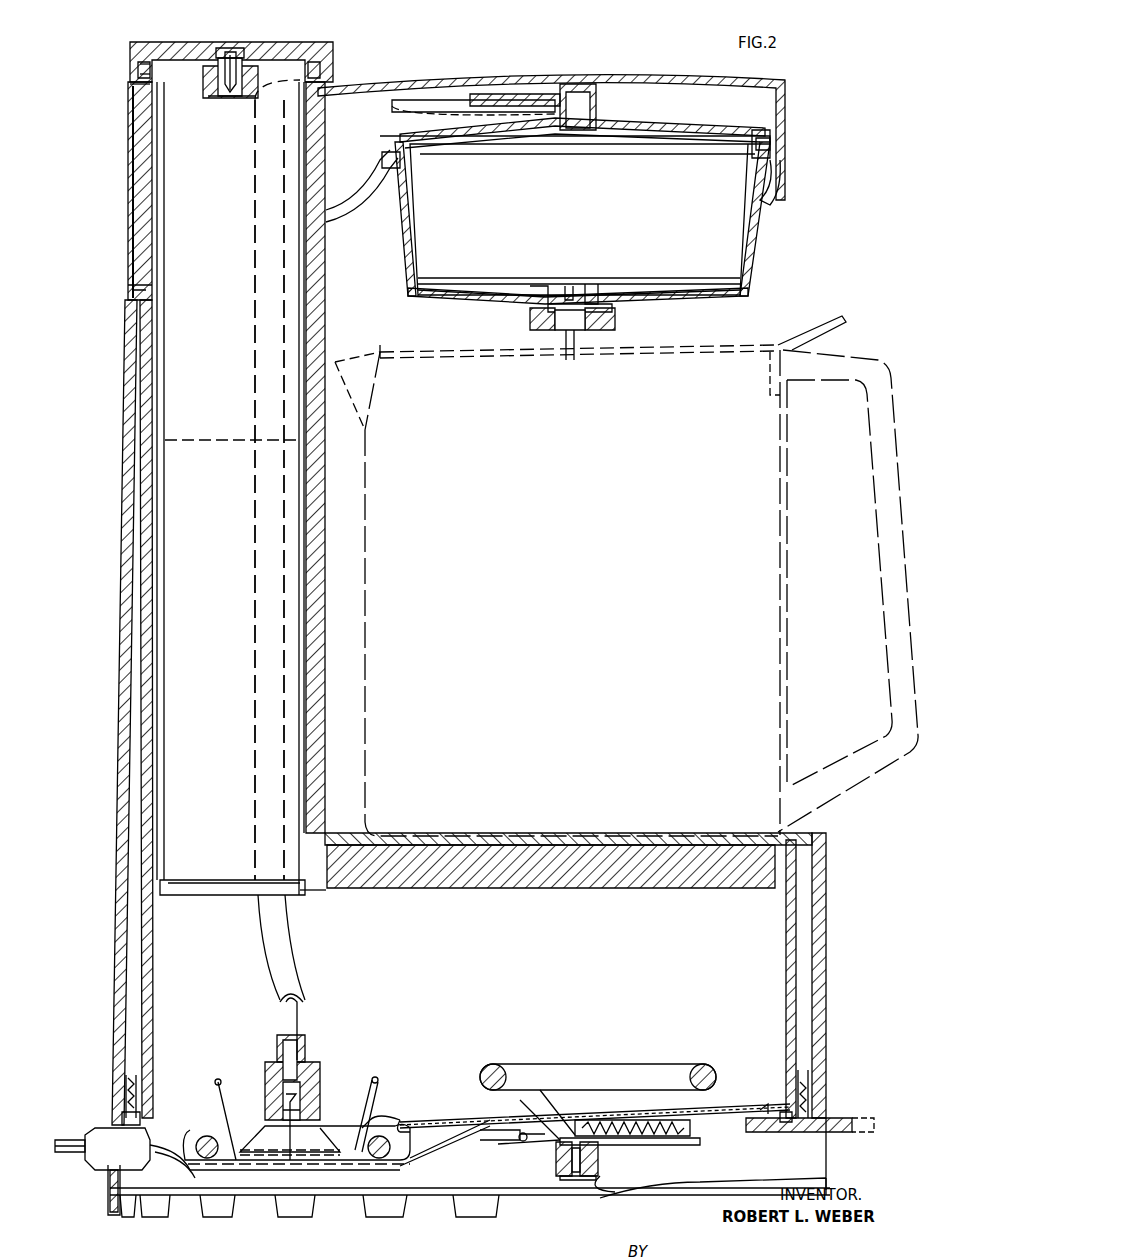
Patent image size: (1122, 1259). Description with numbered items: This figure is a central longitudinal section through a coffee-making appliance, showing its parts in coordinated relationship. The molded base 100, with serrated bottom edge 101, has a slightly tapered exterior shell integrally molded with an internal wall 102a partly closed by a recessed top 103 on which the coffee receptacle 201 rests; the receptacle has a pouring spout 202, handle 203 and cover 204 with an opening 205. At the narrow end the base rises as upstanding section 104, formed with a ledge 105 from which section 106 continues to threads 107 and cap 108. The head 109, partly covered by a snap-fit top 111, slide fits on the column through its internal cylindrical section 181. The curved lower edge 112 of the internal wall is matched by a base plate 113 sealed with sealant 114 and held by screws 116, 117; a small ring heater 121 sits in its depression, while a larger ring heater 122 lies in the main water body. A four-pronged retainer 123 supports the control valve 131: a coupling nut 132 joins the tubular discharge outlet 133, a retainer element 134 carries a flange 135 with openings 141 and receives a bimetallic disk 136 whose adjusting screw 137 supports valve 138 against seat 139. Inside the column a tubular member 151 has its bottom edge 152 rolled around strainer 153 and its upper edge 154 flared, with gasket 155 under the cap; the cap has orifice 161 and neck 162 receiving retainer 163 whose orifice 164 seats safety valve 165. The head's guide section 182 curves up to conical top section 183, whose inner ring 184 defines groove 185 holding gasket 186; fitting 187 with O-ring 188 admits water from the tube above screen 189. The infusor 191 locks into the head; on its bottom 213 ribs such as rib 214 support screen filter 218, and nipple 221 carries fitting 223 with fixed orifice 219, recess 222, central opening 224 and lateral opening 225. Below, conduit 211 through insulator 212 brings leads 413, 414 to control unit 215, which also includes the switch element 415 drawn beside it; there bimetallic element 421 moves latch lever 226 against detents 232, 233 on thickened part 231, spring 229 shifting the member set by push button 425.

The base 100 is at (826, 960).
The serrated bottom edge 101 is at (470, 1218).
The internal wall 102a is at (152, 980).
The recessed top 103 is at (685, 838).
The upstanding section 104 is at (130, 350).
The ledge 105 is at (135, 288).
The section 106 is at (150, 206).
The threads 107 is at (140, 72).
The cap 108 is at (140, 42).
The head 109 is at (128, 172).
The top 111 is at (578, 78).
The lower edge of internal wall 112 is at (784, 1108).
The base plate 113 is at (450, 1120).
The sealant 114 is at (776, 1104).
The screw 116 is at (810, 1074).
The screw 117 is at (120, 1070).
The ring heater 121 is at (372, 1116).
The ring heater 122 is at (598, 1070).
The four-pronged retainer 123 is at (370, 1100).
The control valve 131 is at (265, 1078).
The coupling nut 132 is at (320, 1070).
The tubular discharge outlet 133 is at (528, 80).
The retainer element 134 is at (322, 1098).
The flange 135 is at (380, 1074).
The bimetallic disk 136 is at (330, 1160).
The adjusting screw 137 is at (276, 1172).
The valve 138 is at (286, 1128).
The seat 139 is at (236, 1082).
The openings 141 is at (250, 1126).
The tubular member 151 is at (290, 300).
The bottom edge 152 is at (290, 902).
The strainer 153 is at (230, 897).
The upper edge 154 is at (138, 74).
The gasket 155 is at (140, 65).
The orifice 161 is at (232, 50).
The cylindrical neck 162 is at (244, 60).
The retainer 163 is at (248, 92).
The orifice 164 is at (222, 97).
The valve 165 is at (214, 48).
The internal circular cylindrical section 181 is at (320, 160).
The guide section 182 is at (336, 222).
The top section 183 is at (680, 126).
The inner ring 184 is at (732, 154).
The groove 185 is at (400, 160).
The gasket 186 is at (772, 146).
The fitting 187 is at (600, 98).
The O-ring seal 188 is at (592, 112).
The screen 189 is at (520, 148).
The infusor 191 is at (760, 235).
The coffee receptacle 201 is at (780, 596).
The pouring spout 202 is at (358, 360).
The handle 203 is at (870, 504).
The cover 204 is at (404, 350).
The opening 205 is at (555, 334).
The power supply conduit 211 is at (70, 1140).
The insulator 212 is at (100, 1164).
The bottom 213 is at (690, 296).
The rib 214 is at (538, 286).
The control unit 215 is at (606, 1146).
The screen filter 218 is at (614, 310).
The central orifice 219 is at (570, 286).
The nipple 221 is at (530, 320).
The contoured recess 222 is at (592, 284).
The fitting 223 is at (616, 322).
The central opening 224 is at (566, 356).
The laterally directed opening 225 is at (574, 356).
The latch lever 226 is at (480, 1136).
The spring 229 is at (668, 1136).
The thickened part 231 is at (556, 1160).
The detent 232 is at (566, 1182).
The detent 233 is at (590, 1178).
The lead 413 is at (160, 1175).
The lead 414 is at (185, 1180).
The switch arm 415 is at (616, 1176).
The bimetallic heat responsive element 421 is at (410, 1162).
The push button 425 is at (832, 1116).